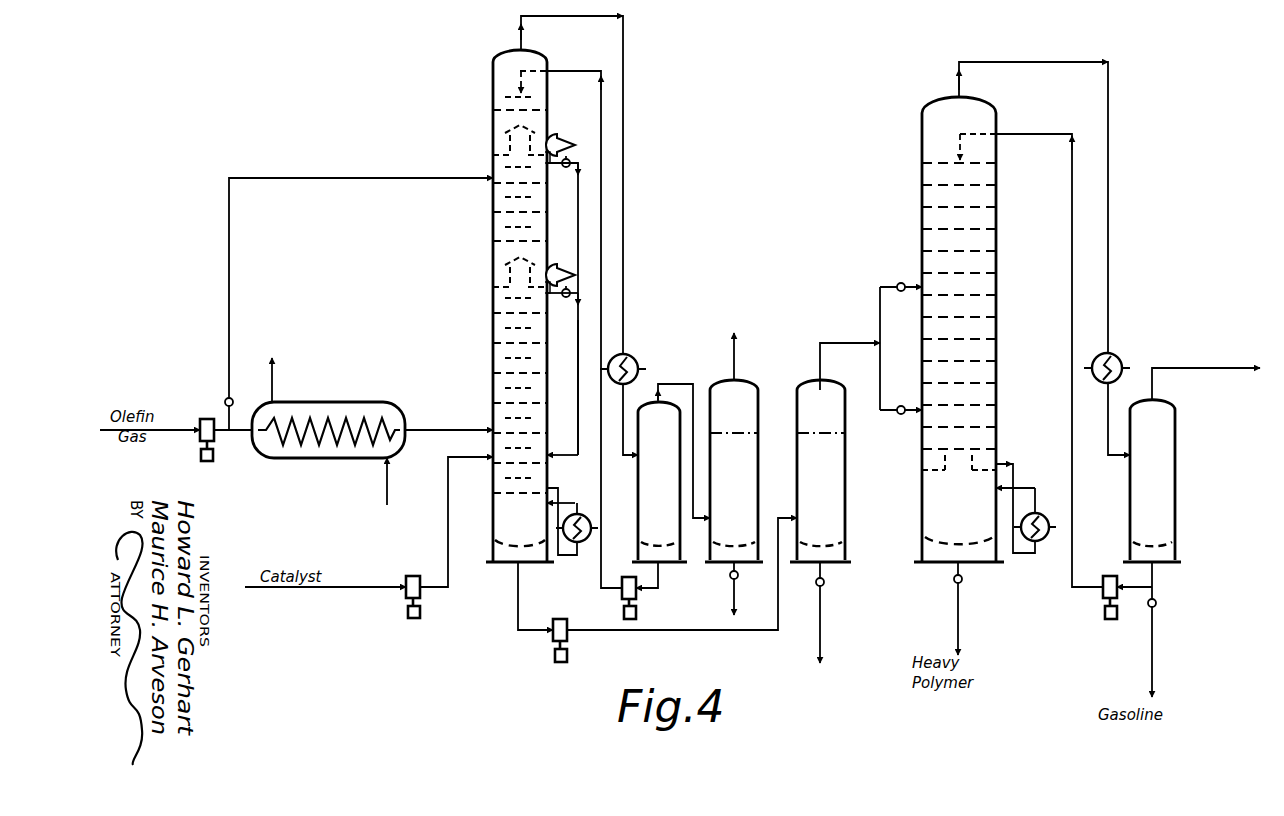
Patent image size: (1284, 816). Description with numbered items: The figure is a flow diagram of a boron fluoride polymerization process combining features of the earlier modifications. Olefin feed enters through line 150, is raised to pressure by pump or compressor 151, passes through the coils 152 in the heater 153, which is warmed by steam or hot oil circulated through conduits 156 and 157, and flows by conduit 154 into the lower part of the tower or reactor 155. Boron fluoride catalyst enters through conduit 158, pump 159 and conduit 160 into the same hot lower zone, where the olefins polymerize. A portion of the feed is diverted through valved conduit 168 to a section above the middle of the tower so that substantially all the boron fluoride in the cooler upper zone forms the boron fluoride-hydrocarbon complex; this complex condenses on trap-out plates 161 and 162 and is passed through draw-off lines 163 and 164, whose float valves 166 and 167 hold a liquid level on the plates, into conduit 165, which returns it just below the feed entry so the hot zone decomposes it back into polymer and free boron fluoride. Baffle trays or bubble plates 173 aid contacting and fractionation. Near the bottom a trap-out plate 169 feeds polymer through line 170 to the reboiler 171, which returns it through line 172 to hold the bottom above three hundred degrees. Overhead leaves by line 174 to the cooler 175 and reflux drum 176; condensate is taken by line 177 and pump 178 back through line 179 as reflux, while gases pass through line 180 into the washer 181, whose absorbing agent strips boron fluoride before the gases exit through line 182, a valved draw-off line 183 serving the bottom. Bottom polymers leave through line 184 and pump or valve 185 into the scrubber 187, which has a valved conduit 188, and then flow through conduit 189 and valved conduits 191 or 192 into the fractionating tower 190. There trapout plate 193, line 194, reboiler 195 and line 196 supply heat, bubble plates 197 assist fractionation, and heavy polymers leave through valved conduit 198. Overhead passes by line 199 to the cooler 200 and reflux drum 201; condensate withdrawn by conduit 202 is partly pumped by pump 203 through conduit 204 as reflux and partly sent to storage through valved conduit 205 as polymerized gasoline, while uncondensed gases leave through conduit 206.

The line 150 is at (198, 440).
The pump or compressor 151 is at (213, 461).
The coils 152 is at (325, 418).
The heater 153 is at (380, 402).
The conduit 154 is at (466, 428).
The tower or reactor 155 is at (510, 58).
The conduit 156 is at (387, 492).
The conduit 157 is at (272, 375).
The conduit 158 is at (385, 590).
The pump 159 is at (415, 576).
The conduit 160 is at (448, 490).
The trap-out plate 161 is at (505, 279).
The trap-out plate 162 is at (505, 146).
The draw-off line 163 is at (566, 298).
The draw-off line 164 is at (566, 168).
The conduit 165 is at (578, 370).
The float valve 166 is at (562, 136).
The float valve 167 is at (566, 264).
The valved conduit 168 is at (229, 286).
The trap-out plate 169 is at (530, 488).
The line 170 is at (565, 556).
The reboiler 171 is at (584, 520).
The line 172 is at (560, 498).
The baffle trays or bubble plates 173 is at (500, 210).
The line 174 is at (623, 60).
The cooler 175 is at (631, 356).
The reflux drum 176 is at (645, 405).
The line 177 is at (660, 580).
The pump 178 is at (636, 613).
The line 179 is at (605, 590).
The line 180 is at (698, 390).
The washer 181 is at (744, 392).
The line 182 is at (734, 350).
The valved draw-off line or charge line 183 is at (734, 585).
The line 184 is at (525, 635).
The pump or valve 185 is at (567, 655).
The scrubber 187 is at (830, 392).
The valved conduit 188 is at (820, 632).
The conduit 189 is at (860, 342).
The fractionating tower 190 is at (945, 108).
The valved conduit 191 is at (892, 286).
The valved conduit 192 is at (893, 412).
The trapout plate 193 is at (975, 460).
The line 194 is at (1015, 478).
The reboiler 195 is at (1040, 541).
The line 196 is at (1035, 508).
The baffle plates and bubble plates 197 is at (975, 248).
The valved conduit 198 is at (958, 625).
The line 199 is at (1085, 62).
The cooler 200 is at (1118, 358).
The reflux drum 201 is at (1170, 462).
The conduit 202 is at (1152, 580).
The pump 203 is at (1104, 614).
The conduit 204 is at (1072, 535).
The valved conduit 205 is at (1152, 640).
The conduit 206 is at (1238, 366).